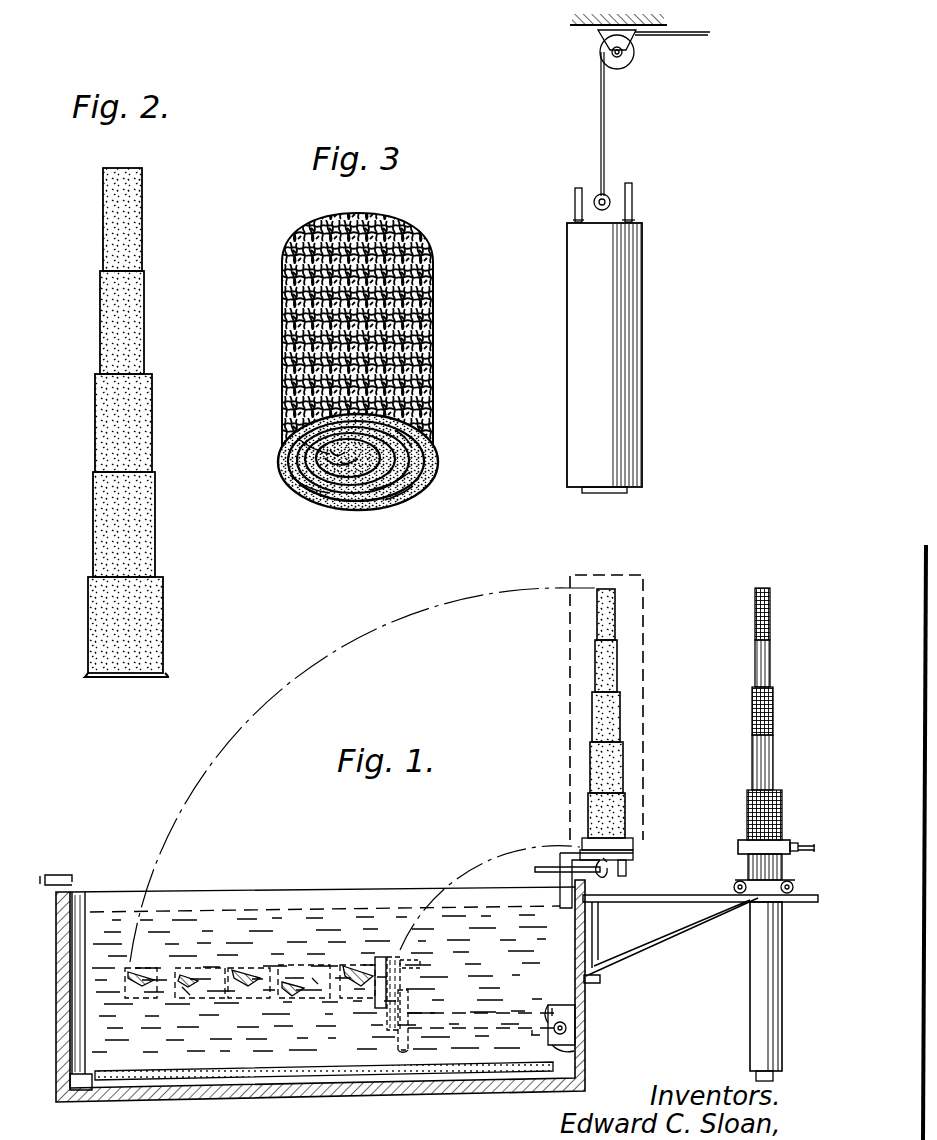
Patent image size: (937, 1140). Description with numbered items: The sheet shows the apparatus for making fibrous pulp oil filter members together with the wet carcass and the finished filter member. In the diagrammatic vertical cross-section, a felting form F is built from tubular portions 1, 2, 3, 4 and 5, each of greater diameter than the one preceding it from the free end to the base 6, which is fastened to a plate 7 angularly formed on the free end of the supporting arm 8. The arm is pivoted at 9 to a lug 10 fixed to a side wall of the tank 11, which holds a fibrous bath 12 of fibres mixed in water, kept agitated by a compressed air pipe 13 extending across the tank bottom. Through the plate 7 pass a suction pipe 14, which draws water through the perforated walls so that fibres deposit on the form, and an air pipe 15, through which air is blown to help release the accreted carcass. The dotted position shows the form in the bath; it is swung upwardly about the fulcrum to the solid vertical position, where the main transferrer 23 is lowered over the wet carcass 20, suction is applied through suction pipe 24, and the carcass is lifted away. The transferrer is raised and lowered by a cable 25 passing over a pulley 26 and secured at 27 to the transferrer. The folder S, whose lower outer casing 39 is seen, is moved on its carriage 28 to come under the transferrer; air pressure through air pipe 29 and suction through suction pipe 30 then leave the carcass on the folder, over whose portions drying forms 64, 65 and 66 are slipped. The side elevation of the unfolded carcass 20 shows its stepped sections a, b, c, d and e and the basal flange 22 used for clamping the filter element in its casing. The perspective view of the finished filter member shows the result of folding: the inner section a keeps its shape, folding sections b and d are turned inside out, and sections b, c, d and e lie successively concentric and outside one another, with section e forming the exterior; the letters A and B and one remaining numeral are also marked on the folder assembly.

In FIG. 1, the tubular portion 1 is at (150, 1000).
In FIG. 1, the tubular portion 2 is at (212, 998).
In FIG. 1, the tubular portion 3 is at (260, 998).
In FIG. 1, the tubular portion 4 is at (312, 998).
In FIG. 1, the tubular portion 5 is at (355, 998).
In FIG. 1, the base 6 is at (633, 844).
In FIG. 1, the plate 7 is at (633, 856).
In FIG. 1, the supporting arm 8 is at (500, 1012).
In FIG. 1, the pivot 9 is at (572, 1050).
In FIG. 1, the lug 10 is at (566, 1033).
In FIG. 1, the tank 11 is at (62, 876).
In FIG. 1, the fibrous bath 12 is at (128, 960).
In FIG. 1, the compressed air pipe 13 is at (320, 1085).
In FIG. 1, the suction pipe 14 is at (606, 878).
In FIG. 1, the air pipe 15 is at (626, 870).
In FIG. 2, the wet carcass 20 is at (128, 420).
In FIG. 1, the wet carcass 20 is at (615, 708).
In FIG. 2, the basal flange 22 is at (165, 674).
In FIG. 3, the basal flange 22 is at (378, 373).
In FIG. 1, the main transferrer 23 is at (622, 310).
In FIG. 1, the suction pipe 24 is at (574, 200).
In FIG. 1, the cable 25 is at (690, 42).
In FIG. 1, the pulley 26 is at (627, 60).
In FIG. 1, the cable attachment 27 is at (604, 194).
In FIG. 1, the carriage 28 is at (752, 882).
In FIG. 1, the air pipe 29 is at (633, 193).
In FIG. 1, the suction pipe 30 is at (801, 838).
In FIG. 1, the lower outer casing 39 is at (770, 934).
In FIG. 1, the drying form 64 is at (770, 603).
In FIG. 1, the drying form 65 is at (773, 710).
In FIG. 1, the drying form 66 is at (752, 805).
In FIG. 1, the rod portion A is at (757, 663).
In FIG. 1, the rod portion B is at (752, 755).
In FIG. 1, the folder S is at (797, 727).
In FIG. 1, the felting form F is at (267, 963).
In FIG. 2, the inner section a is at (103, 193).
In FIG. 3, the inner section a is at (370, 478).
In FIG. 2, the folding section b is at (100, 294).
In FIG. 3, the folding section b is at (380, 445).
In FIG. 2, the section c is at (95, 400).
In FIG. 3, the section c is at (415, 457).
In FIG. 2, the folding section d is at (100, 500).
In FIG. 3, the folding section d is at (405, 455).
In FIG. 2, the exterior section e is at (95, 600).
In FIG. 3, the exterior section e is at (434, 310).